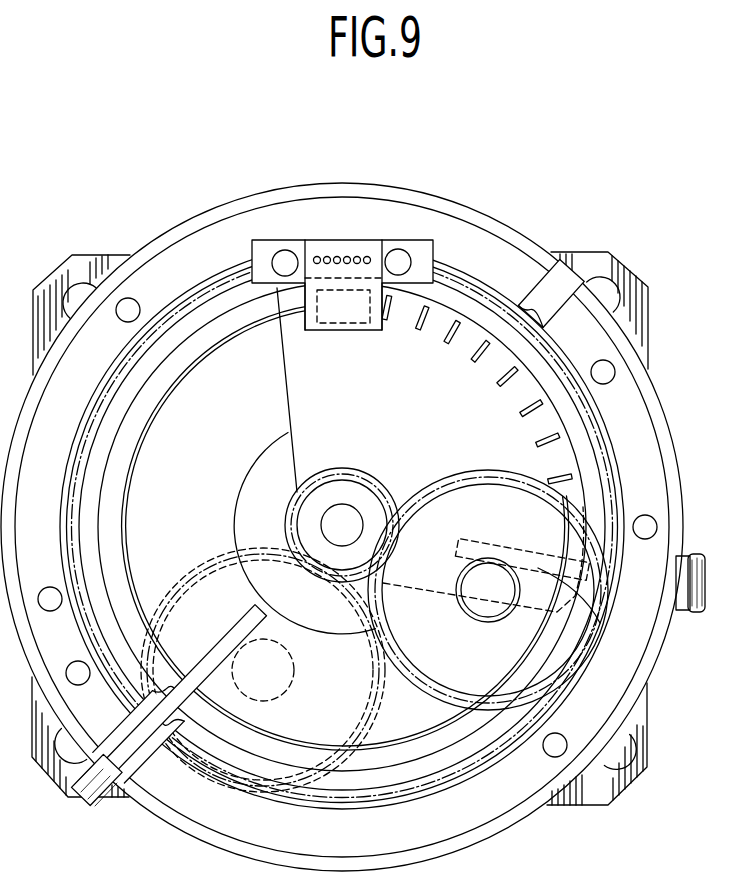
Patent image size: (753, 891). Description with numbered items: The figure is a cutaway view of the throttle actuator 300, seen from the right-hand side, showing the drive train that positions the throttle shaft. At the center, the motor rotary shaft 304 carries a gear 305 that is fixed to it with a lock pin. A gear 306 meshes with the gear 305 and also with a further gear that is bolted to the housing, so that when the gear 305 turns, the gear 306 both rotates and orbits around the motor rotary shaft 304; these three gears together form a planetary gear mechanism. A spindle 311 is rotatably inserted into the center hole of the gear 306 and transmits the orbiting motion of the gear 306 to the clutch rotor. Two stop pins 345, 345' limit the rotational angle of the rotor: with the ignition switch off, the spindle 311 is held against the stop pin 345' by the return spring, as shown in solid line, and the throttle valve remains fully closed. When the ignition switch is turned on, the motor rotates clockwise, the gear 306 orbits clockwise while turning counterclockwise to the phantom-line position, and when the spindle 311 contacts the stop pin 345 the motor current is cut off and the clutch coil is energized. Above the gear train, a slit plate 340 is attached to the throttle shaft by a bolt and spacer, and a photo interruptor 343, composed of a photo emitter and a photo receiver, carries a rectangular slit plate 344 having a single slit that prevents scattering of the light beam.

The throttle actuator 300 is at (518, 222).
The motor rotary shaft 304 is at (350, 518).
The gear 305 is at (344, 491).
The gear 306 is at (483, 498).
The spindle 311 is at (498, 612).
The slit plate 340 is at (300, 401).
The photo interruptor 343 is at (333, 303).
The rectangular slit plate 344 is at (361, 288).
The stop pin 345 is at (169, 679).
The stop pin 345' is at (548, 597).